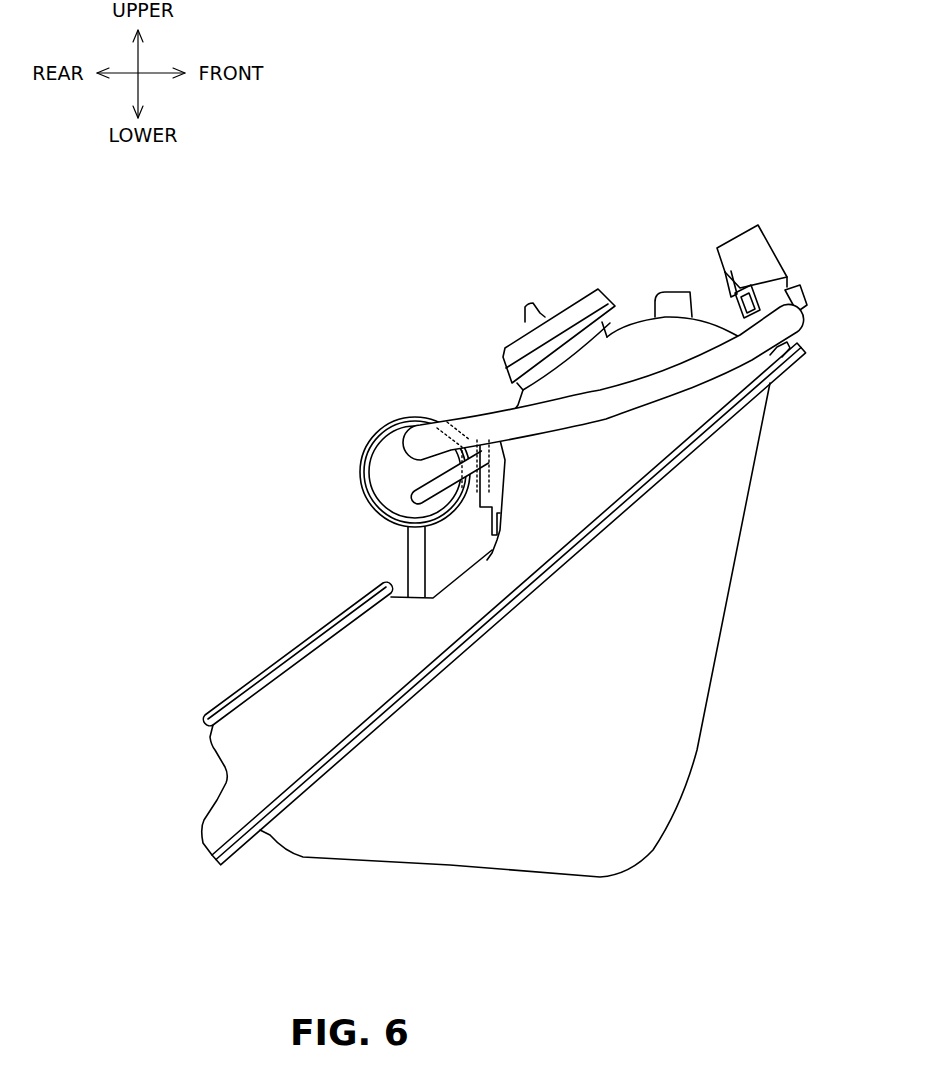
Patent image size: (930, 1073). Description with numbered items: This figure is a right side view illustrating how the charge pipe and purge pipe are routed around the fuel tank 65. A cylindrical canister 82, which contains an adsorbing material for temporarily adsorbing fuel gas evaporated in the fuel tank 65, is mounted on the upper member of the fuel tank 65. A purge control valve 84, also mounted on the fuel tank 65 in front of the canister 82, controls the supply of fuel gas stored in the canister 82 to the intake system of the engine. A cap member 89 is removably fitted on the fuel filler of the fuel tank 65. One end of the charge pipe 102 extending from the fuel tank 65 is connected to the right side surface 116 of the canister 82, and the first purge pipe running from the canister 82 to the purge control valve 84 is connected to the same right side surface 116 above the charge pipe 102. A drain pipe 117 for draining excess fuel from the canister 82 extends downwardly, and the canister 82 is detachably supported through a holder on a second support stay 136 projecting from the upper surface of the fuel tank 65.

The fuel tank 65 is at (685, 705).
The canister 82 is at (307, 462).
The purge control valve 84 is at (740, 248).
The cap member 89 is at (587, 312).
The charge pipe 102 is at (418, 497).
The right side surface 116 is at (387, 462).
The drain pipe 117 is at (417, 555).
The second support stay 136 is at (492, 550).